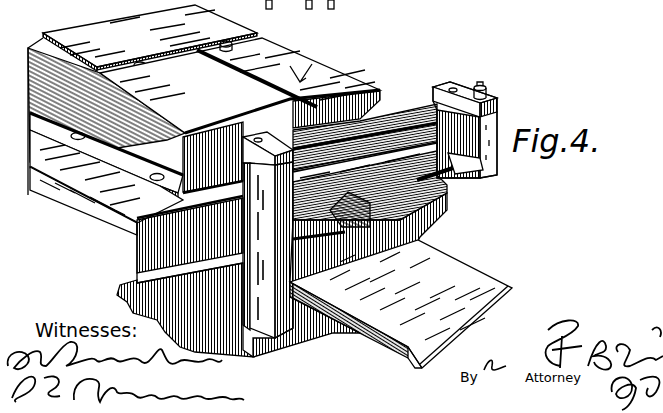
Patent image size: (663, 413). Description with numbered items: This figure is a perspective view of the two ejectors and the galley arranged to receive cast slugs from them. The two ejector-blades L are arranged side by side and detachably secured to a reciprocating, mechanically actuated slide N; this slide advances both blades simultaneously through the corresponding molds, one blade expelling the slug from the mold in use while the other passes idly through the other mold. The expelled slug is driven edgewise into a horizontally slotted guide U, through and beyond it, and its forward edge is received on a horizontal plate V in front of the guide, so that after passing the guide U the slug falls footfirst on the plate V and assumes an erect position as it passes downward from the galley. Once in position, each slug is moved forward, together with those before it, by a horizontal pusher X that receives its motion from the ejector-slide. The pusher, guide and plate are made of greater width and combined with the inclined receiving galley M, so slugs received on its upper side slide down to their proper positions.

The ejector slide N is at (150, 38).
The ejector-blade L is at (240, 85).
The receiving galley M is at (333, 267).
The horizontally slotted guide U is at (423, 118).
The horizontal plate V is at (452, 192).
The horizontal pusher X is at (395, 220).